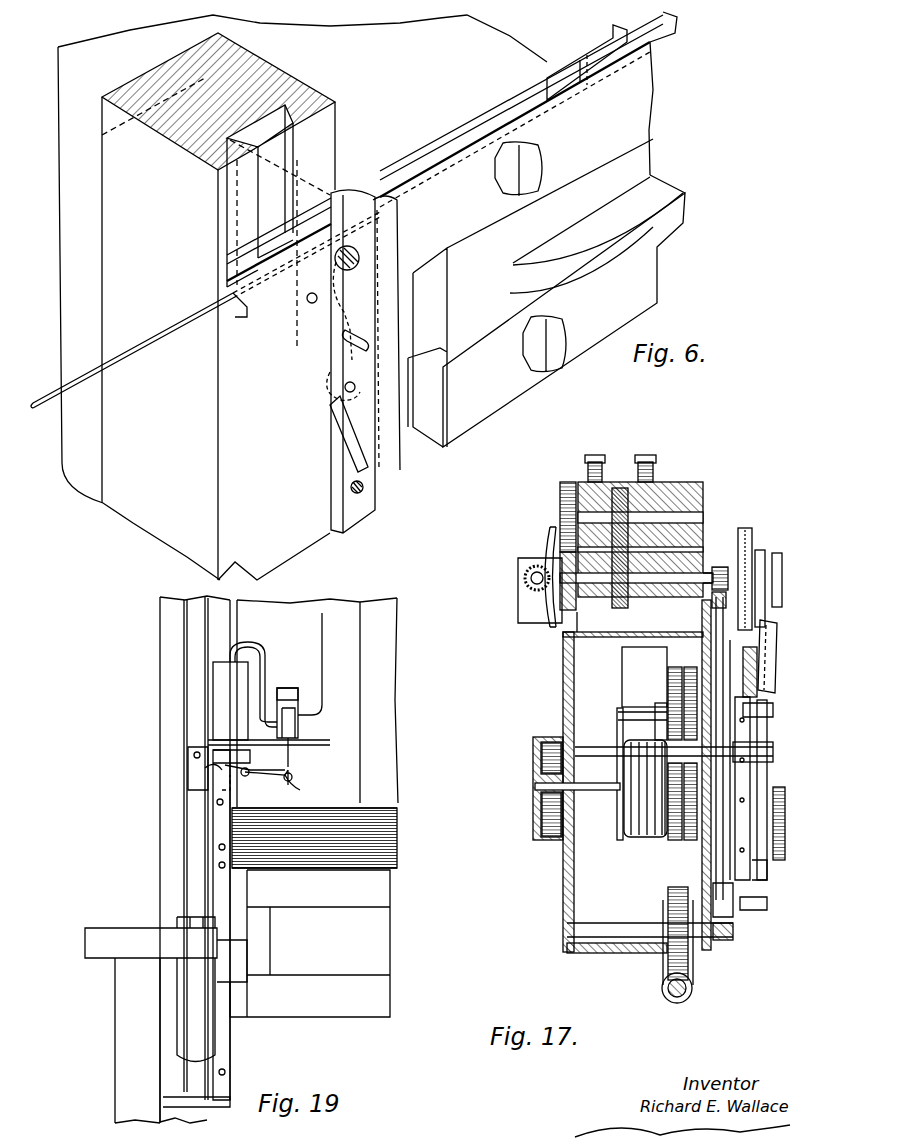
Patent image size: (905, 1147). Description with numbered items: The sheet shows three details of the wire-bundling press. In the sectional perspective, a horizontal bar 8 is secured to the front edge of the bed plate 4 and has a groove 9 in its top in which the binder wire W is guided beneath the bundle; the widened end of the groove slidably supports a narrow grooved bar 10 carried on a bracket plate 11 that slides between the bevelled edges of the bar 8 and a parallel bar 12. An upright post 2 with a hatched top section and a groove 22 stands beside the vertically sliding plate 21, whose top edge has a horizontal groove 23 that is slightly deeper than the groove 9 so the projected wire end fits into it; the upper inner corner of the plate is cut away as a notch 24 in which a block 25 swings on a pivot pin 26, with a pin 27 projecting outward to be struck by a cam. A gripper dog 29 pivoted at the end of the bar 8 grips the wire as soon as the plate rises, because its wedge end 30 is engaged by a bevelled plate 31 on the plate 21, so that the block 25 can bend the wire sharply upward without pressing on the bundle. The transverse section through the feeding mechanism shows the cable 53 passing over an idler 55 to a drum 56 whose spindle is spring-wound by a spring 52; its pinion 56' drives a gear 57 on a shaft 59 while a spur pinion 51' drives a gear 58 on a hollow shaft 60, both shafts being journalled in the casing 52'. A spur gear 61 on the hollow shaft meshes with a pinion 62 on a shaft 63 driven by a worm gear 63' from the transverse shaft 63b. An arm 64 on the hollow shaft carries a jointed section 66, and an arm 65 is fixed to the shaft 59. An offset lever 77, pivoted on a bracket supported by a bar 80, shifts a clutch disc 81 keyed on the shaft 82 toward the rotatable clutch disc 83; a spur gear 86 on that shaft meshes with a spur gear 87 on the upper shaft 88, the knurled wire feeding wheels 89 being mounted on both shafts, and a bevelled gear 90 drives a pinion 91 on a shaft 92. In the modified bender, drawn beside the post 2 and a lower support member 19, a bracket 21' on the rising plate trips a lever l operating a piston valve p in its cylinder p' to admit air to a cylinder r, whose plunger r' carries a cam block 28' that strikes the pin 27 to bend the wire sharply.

In FIG. 6, the post 2 is at (267, 78).
In FIG. 19, the post 2 is at (168, 629).
In FIG. 6, the bed plate 4 is at (497, 47).
In FIG. 19, the bed plate 4 is at (385, 885).
In FIG. 6, the horizontal bar 8 is at (423, 143).
In FIG. 6, the groove 9 is at (482, 123).
In FIG. 6, the narrow grooved bar 10 is at (597, 47).
In FIG. 6, the bracket plate 11 is at (643, 152).
In FIG. 6, the parallel bar 12 is at (500, 403).
In FIG. 19, the support bracket 19 is at (185, 1023).
In FIG. 6, the plate 21 is at (205, 375).
In FIG. 19, the plate 21 is at (156, 846).
In FIG. 6, the groove 22 is at (277, 138).
In FIG. 6, the horizontal groove 23 is at (233, 307).
In FIG. 6, the longitudinal notch 24 is at (327, 318).
In FIG. 6, the block 25 is at (333, 335).
In FIG. 19, the block 25 is at (215, 830).
In FIG. 6, the pivot pin 26 is at (350, 392).
In FIG. 6, the pin 27 is at (337, 375).
In FIG. 19, the pin 27 is at (218, 802).
In FIG. 6, the gripper dog 29 is at (380, 250).
In FIG. 6, the wedge end 30 is at (353, 435).
In FIG. 6, the bevelled plate 31 is at (360, 517).
In FIG. 6, the wire W is at (140, 340).
In FIG. 17, the spur pinion 51' is at (665, 927).
In FIG. 17, the spring 52 is at (569, 801).
In FIG. 17, the supporting casing 52' is at (542, 856).
In FIG. 17, the cable 53 is at (653, 812).
In FIG. 17, the idler 55 is at (655, 700).
In FIG. 17, the drum 56 is at (626, 797).
In FIG. 17, the pinion 56' is at (658, 799).
In FIG. 17, the gear 57 is at (676, 840).
In FIG. 17, the gear 58 is at (693, 840).
In FIG. 17, the shaft 59 is at (663, 745).
In FIG. 17, the hollow shaft 60 is at (762, 780).
In FIG. 17, the spur gear 61 is at (713, 603).
In FIG. 17, the pinion 62 is at (733, 935).
In FIG. 17, the shaft 63 is at (650, 922).
In FIG. 17, the worm gear 63' is at (658, 983).
In FIG. 17, the transverse shaft 63b is at (692, 990).
In FIG. 17, the arm 64 is at (775, 790).
In FIG. 17, the arm 65 is at (768, 903).
In FIG. 17, the jointed section 66 is at (753, 870).
In FIG. 17, the offset lever 77 is at (766, 693).
In FIG. 17, the bar 80 is at (745, 660).
In FIG. 17, the clutch disc 81 is at (760, 550).
In FIG. 17, the shaft 82 is at (718, 567).
In FIG. 17, the clutch disc 83 is at (742, 528).
In FIG. 17, the spur gear 86 is at (566, 612).
In FIG. 17, the spur gear 87 is at (566, 483).
In FIG. 17, the shaft 88 is at (675, 515).
In FIG. 17, the knurled wire feeding wheels 89 is at (618, 492).
In FIG. 17, the bevelled gear 90 is at (550, 540).
In FIG. 17, the pinion 91 is at (530, 590).
In FIG. 17, the shaft 92 is at (525, 578).
In FIG. 19, the cylinder r is at (269, 703).
In FIG. 19, the plunger r' is at (246, 691).
In FIG. 19, the piston valve p is at (304, 690).
In FIG. 19, the cylinder p' is at (293, 676).
In FIG. 19, the lever l is at (300, 790).
In FIG. 19, the bracket 21' is at (175, 768).
In FIG. 19, the cam block 28' is at (249, 761).